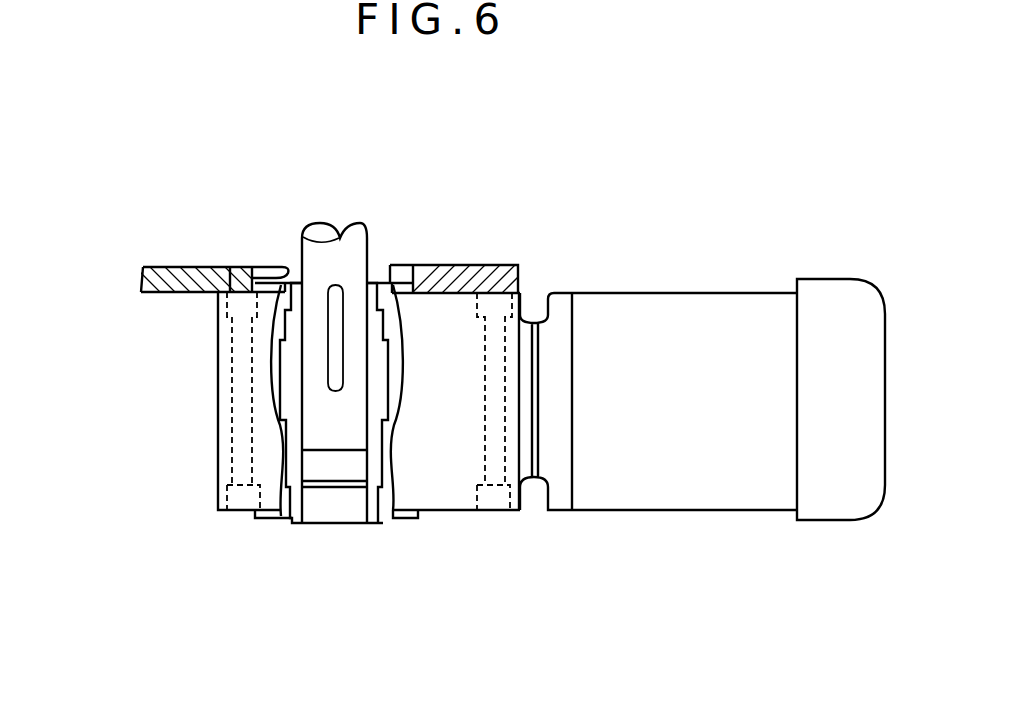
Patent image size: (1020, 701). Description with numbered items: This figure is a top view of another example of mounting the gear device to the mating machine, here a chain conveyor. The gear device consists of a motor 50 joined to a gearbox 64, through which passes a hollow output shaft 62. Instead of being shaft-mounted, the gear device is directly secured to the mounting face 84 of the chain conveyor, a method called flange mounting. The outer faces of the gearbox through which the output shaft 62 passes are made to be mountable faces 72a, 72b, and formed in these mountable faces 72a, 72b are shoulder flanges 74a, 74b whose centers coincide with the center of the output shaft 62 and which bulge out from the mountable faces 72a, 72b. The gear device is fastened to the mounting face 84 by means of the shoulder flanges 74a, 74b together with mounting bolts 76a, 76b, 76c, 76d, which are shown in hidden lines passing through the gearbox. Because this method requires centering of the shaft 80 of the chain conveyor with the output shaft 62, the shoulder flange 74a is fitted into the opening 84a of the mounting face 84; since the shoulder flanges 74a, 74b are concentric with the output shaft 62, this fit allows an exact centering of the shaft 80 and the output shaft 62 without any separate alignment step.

The motor 50 is at (675, 300).
The output shaft 62 is at (372, 279).
The gearbox 64 is at (283, 535).
The mountable face 72a is at (466, 265).
The mountable face 72b is at (452, 512).
The shoulder flange 74a is at (403, 265).
The shoulder flange 74b is at (404, 518).
The mounting bolt 76a is at (160, 405).
The mounting bolt 76b is at (233, 372).
The mounting bolt 76c is at (589, 401).
The mounting bolt 76d is at (505, 377).
The shaft of the chain conveyor 80 is at (322, 247).
The mounting face 84 is at (178, 272).
The opening 84a is at (284, 262).